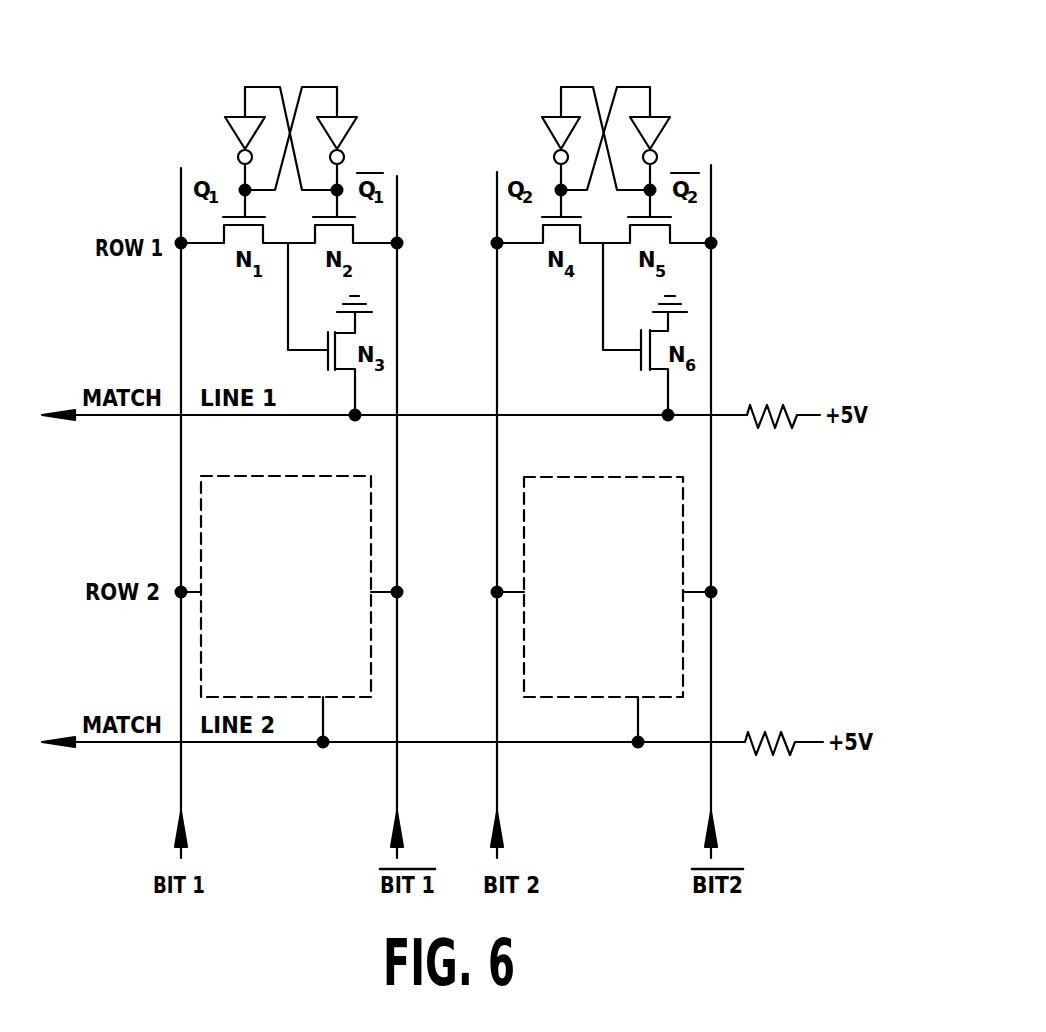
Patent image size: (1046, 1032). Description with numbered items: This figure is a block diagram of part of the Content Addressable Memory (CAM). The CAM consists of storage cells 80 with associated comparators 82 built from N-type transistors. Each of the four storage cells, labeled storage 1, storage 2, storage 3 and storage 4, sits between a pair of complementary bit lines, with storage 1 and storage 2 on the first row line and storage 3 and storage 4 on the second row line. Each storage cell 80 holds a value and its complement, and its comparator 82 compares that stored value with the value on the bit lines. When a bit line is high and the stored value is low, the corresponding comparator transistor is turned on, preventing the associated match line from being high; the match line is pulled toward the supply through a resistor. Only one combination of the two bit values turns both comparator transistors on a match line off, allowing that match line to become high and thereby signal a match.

The storage cell 80 is at (645, 235).
The comparator 82 is at (680, 126).
The storage element 1 (cross-coupled inverter latch) 1 is at (292, 136).
The storage element 2 (cross-coupled inverter latch) 2 is at (635, 136).
The storage element 3 is at (286, 609).
The storage element 4 is at (603, 609).